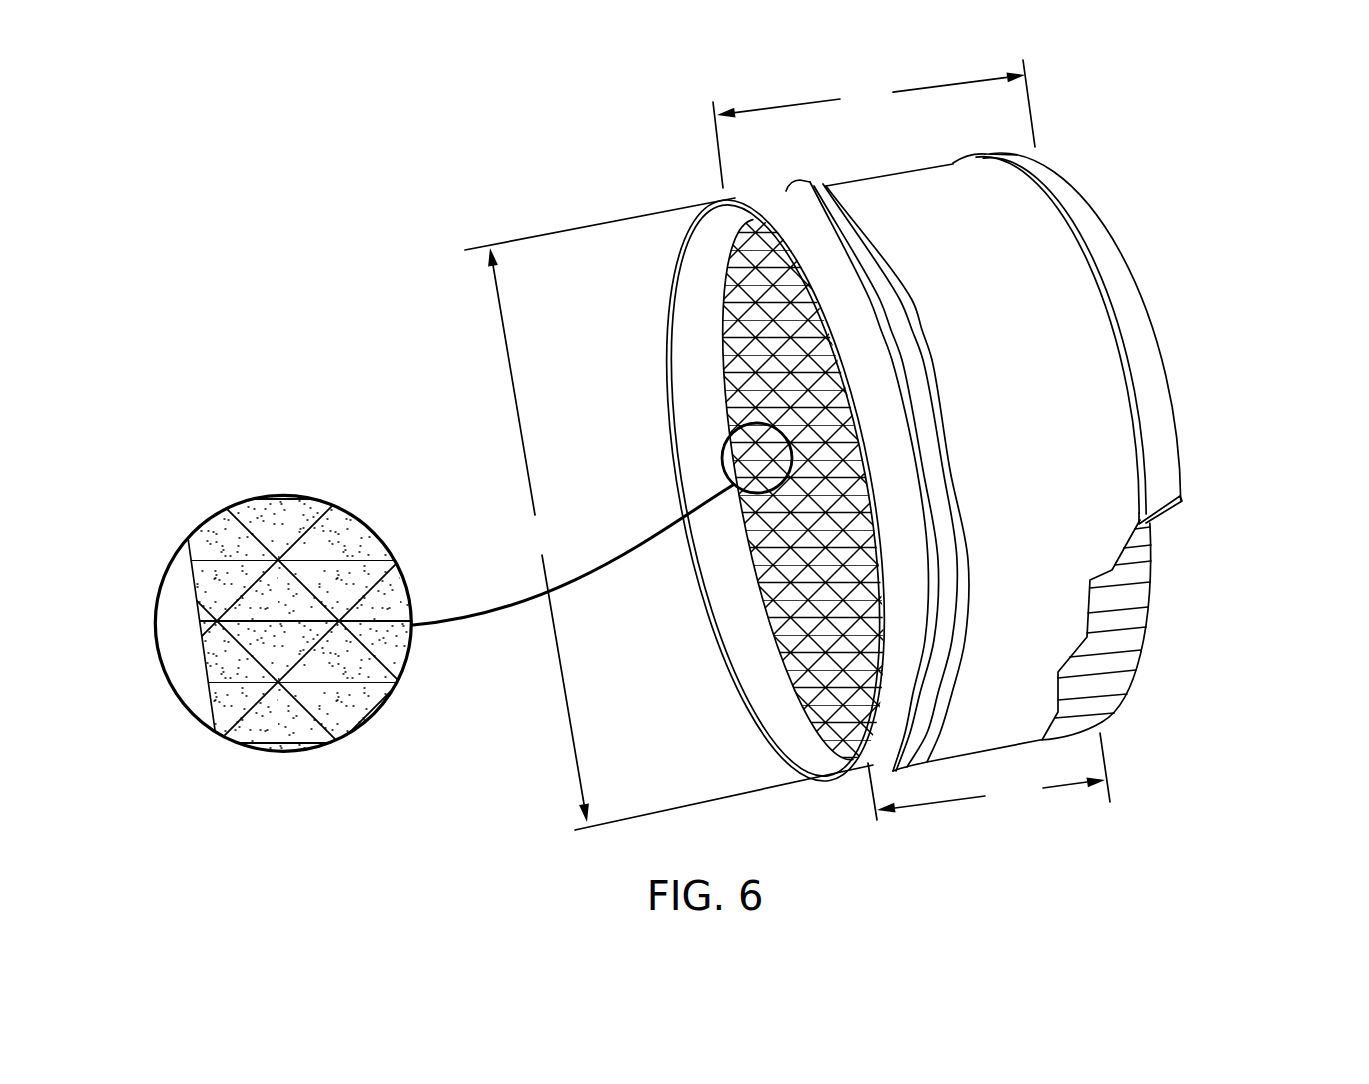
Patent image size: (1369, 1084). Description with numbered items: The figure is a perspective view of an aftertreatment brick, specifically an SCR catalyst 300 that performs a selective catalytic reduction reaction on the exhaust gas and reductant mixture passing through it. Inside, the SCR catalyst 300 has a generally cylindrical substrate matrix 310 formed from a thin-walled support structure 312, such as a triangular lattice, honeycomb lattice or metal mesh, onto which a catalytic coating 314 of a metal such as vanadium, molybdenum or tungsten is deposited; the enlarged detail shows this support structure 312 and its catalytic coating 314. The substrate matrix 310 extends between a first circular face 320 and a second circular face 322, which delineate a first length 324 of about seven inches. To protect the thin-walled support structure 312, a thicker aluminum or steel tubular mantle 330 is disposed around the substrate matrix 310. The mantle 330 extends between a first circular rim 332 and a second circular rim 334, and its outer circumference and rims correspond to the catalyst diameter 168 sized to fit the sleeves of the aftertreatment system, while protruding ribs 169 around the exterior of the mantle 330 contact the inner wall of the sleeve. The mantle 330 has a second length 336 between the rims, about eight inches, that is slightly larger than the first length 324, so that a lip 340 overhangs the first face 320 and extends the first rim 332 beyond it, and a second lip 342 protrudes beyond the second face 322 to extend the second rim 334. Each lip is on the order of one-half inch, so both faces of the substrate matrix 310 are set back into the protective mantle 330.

The SCR catalyst 300 is at (633, 158).
The substrate matrix 310 is at (1105, 658).
The support structure 312 is at (287, 617).
The catalytic coating 314 is at (226, 675).
The first circular face 320 is at (775, 606).
The second circular face 322 is at (1147, 633).
The first length 324 is at (989, 776).
The tubular mantle 330 is at (1033, 253).
The first circular rim 332 is at (672, 277).
The second circular rim 334 is at (1173, 443).
The second length 336 is at (874, 124).
The lip 340 is at (753, 663).
The second lip 342 is at (1180, 500).
The catalyst diameter 168 is at (669, 514).
The protruding ribs 169 is at (810, 180).